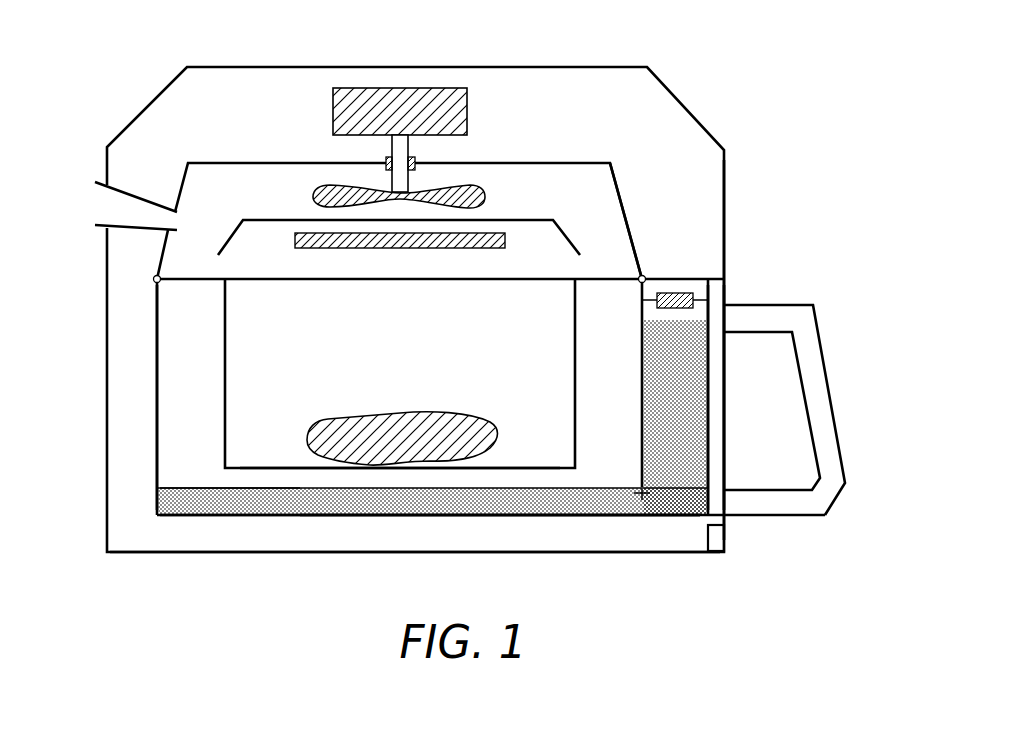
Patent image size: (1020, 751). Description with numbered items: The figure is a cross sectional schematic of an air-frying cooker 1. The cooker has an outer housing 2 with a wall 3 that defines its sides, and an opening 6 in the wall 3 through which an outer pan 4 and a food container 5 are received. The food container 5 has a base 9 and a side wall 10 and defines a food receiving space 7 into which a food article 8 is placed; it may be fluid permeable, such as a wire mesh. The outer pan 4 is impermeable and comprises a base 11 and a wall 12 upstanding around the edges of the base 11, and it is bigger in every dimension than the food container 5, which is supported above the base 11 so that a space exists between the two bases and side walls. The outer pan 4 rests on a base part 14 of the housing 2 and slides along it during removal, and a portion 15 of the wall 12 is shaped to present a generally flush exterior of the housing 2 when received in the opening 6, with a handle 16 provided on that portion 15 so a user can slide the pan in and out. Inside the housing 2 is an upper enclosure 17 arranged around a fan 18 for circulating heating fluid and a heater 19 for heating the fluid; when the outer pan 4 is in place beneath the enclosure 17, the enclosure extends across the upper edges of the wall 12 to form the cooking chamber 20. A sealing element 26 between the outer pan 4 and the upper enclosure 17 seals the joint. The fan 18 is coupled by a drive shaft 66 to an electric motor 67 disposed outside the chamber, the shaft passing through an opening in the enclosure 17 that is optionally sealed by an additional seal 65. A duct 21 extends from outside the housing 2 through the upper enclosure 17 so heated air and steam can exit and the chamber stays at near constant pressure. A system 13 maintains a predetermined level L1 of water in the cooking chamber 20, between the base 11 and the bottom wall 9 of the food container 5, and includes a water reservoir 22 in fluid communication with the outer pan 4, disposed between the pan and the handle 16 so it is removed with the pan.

The air-frying cooker 1 is at (746, 60).
The outer housing 2 is at (550, 62).
The wall 3 is at (726, 203).
The outer pan 4 is at (545, 524).
The food container 5 is at (465, 478).
The opening 6 is at (727, 518).
The food receiving space 7 is at (558, 343).
The food article 8 is at (402, 413).
The base 9 is at (310, 469).
The side wall 10 is at (225, 363).
The base 11 is at (607, 517).
The wall 12 is at (157, 433).
The system 13 is at (720, 458).
The base part 14 is at (160, 553).
The portion 15 is at (718, 422).
The handle 16 is at (818, 342).
The upper enclosure 17 is at (233, 163).
The fan 18 is at (313, 197).
The heater 19 is at (485, 249).
The cooking chamber 20 is at (608, 190).
The duct 21 is at (122, 194).
The water reservoir 22 is at (693, 375).
The sealing element 26 is at (153, 279).
The additional seal 65 is at (418, 158).
The drive shaft 66 is at (392, 146).
The electric motor 67 is at (442, 88).
The predetermined level L1 is at (187, 487).